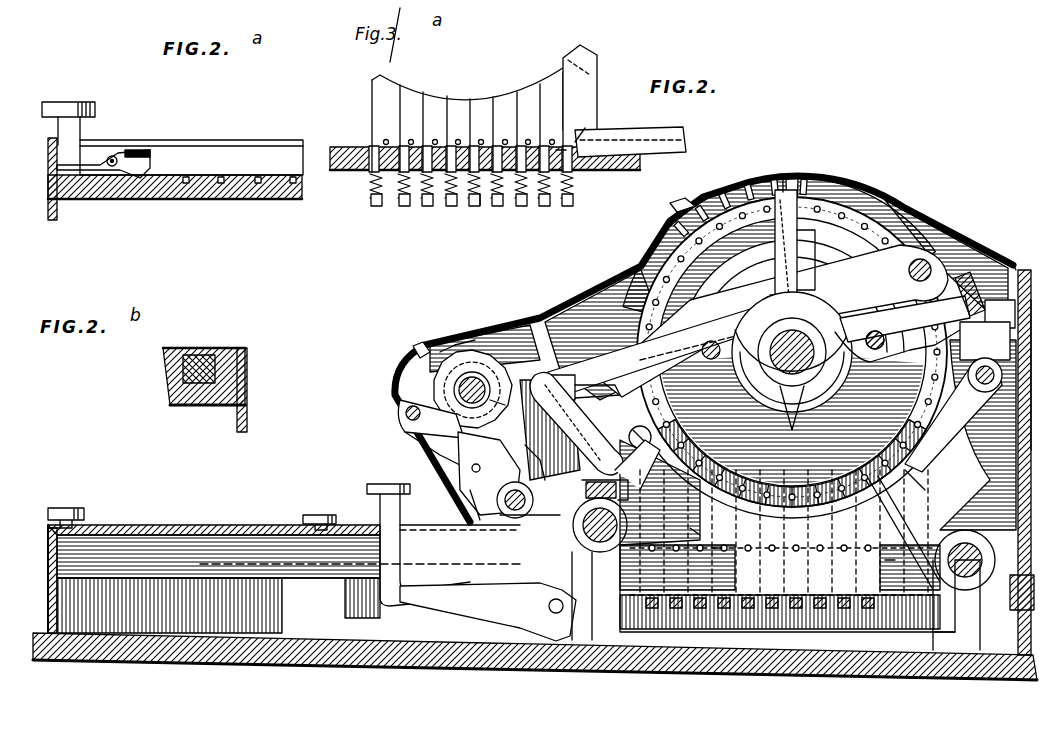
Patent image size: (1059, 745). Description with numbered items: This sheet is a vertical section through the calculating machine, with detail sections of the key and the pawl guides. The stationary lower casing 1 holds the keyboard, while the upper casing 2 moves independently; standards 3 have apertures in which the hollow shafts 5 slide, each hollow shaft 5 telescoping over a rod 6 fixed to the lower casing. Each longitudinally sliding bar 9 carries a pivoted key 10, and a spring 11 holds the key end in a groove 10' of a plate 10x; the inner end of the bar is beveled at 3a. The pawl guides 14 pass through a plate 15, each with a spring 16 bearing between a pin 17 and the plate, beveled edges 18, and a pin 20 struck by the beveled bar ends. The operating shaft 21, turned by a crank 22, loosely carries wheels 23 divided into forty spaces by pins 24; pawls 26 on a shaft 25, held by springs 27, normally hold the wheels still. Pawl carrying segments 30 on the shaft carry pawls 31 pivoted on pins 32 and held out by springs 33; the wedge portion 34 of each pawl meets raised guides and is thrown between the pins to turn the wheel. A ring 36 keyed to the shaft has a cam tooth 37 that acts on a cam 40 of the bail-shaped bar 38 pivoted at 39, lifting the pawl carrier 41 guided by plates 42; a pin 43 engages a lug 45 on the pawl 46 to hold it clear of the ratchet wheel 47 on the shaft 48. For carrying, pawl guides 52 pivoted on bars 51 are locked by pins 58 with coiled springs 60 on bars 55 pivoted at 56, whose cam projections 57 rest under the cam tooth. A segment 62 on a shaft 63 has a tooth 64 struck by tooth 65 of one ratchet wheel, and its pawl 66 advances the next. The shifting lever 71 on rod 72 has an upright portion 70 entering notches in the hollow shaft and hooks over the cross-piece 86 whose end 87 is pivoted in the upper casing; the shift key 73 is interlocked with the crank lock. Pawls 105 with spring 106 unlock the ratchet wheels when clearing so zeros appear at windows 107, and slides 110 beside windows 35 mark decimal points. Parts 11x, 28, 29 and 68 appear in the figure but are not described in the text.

In FIG. 2, the lower casing 1 is at (547, 661).
In FIG. 2, the upper casing 2 is at (790, 178).
In FIG. 2, the standard 3 is at (800, 597).
In FIG. 3a, the beveled inner end 3a is at (560, 149).
In FIG. 2, the hollow shaft 5 is at (47, 528).
In FIG. 3a, the rod 6 is at (480, 200).
In FIG. 2, the rod 6 is at (604, 535).
In FIG. 2a, the sliding bar 9 is at (236, 162).
In FIG. 3a, the sliding bar 9 is at (660, 140).
In FIG. 2b, the sliding bar 9 is at (213, 406).
In FIG. 2, the sliding bar 9 is at (900, 630).
In FIG. 2a, the key 10 is at (71, 106).
In FIG. 2, the key 10 is at (192, 502).
In FIG. 2a, the groove 10' is at (239, 203).
In FIG. 2a, the plate 10x is at (287, 201).
In FIG. 2b, the plate 10x is at (179, 406).
In FIG. 2, the plate 10x is at (178, 600).
In FIG. 2a, the spring 11 is at (149, 146).
In FIG. 2, the spring 11 is at (460, 526).
In FIG. 2, the inclined bar 11x is at (898, 545).
In FIG. 3a, the pawl guide 14 is at (393, 78).
In FIG. 2, the pawl guide 14 is at (760, 540).
In FIG. 3a, the plate 15 is at (352, 171).
In FIG. 2, the spring 16 is at (800, 610).
In FIG. 3a, the pin 17 is at (428, 206).
In FIG. 2, the pin 17 is at (850, 610).
In FIG. 2, the beveled edge 18 is at (693, 520).
In FIG. 3a, the pin 20 is at (590, 128).
In FIG. 2, the pin 20 is at (712, 548).
In FIG. 2, the operating shaft 21 is at (808, 330).
In FIG. 2, the crank 22 is at (658, 353).
In FIG. 2, the wheel 23 is at (858, 240).
In FIG. 2, the pin 24 is at (908, 242).
In FIG. 2, the shaft 25 is at (1032, 390).
In FIG. 2, the pawl 26 is at (955, 420).
In FIG. 2, the spring 27 is at (939, 474).
In FIG. 2, the bracket 28 is at (378, 528).
In FIG. 2, the guide pin 29 is at (890, 558).
In FIG. 2, the pawl carrying segment 30 is at (792, 296).
In FIG. 2, the pawl 31 is at (800, 190).
In FIG. 2, the pin 32 is at (812, 275).
In FIG. 2, the spring 33 is at (668, 212).
In FIG. 2, the contracted portion 34 is at (784, 175).
In FIG. 2, the window 35 is at (716, 193).
In FIG. 2, the ring 36 is at (878, 330).
In FIG. 2, the cam tooth 37 is at (780, 400).
In FIG. 2, the bail-shaped bar 38 is at (700, 337).
In FIG. 2, the pivot 39 is at (926, 262).
In FIG. 2, the cam 40 is at (768, 298).
In FIG. 2, the pawl carrier 41 is at (597, 395).
In FIG. 2, the guide plate 42 is at (530, 540).
In FIG. 2, the pin 43 is at (533, 462).
In FIG. 2, the lug 45 is at (627, 436).
In FIG. 2, the pawl 46 is at (570, 423).
In FIG. 2, the ratchet wheel 47 is at (452, 346).
In FIG. 2, the shaft 48 is at (480, 380).
In FIG. 2, the bar 51 is at (1012, 302).
In FIG. 2, the pawl guide 52 is at (985, 341).
In FIG. 2, the bar 55 is at (902, 329).
In FIG. 2, the pivot 56 is at (702, 356).
In FIG. 2, the cam projection 57 is at (828, 398).
In FIG. 2, the pin 58 is at (1015, 262).
In FIG. 2, the coiled spring 60 is at (975, 280).
In FIG. 2, the segment 62 is at (478, 500).
In FIG. 2, the shaft 63 is at (534, 500).
In FIG. 2, the gear tooth 64 is at (502, 406).
In FIG. 2, the gear tooth 65 is at (473, 389).
In FIG. 2, the pawl 66 is at (489, 473).
In FIG. 2, the pin 68 is at (642, 430).
In FIG. 2, the upwardly extending portion 70 is at (598, 570).
In FIG. 2, the shifting lever 71 is at (483, 612).
In FIG. 2, the rod 72 is at (560, 614).
In FIG. 2, the shift key 73 is at (366, 489).
In FIG. 2, the cross-piece 86 is at (616, 490).
In FIG. 2, the end 87 is at (642, 465).
In FIG. 2, the pawl 105 is at (410, 405).
In FIG. 2, the spring 106 is at (415, 436).
In FIG. 2, the window 107 is at (465, 345).
In FIG. 2, the slide 110 is at (416, 348).